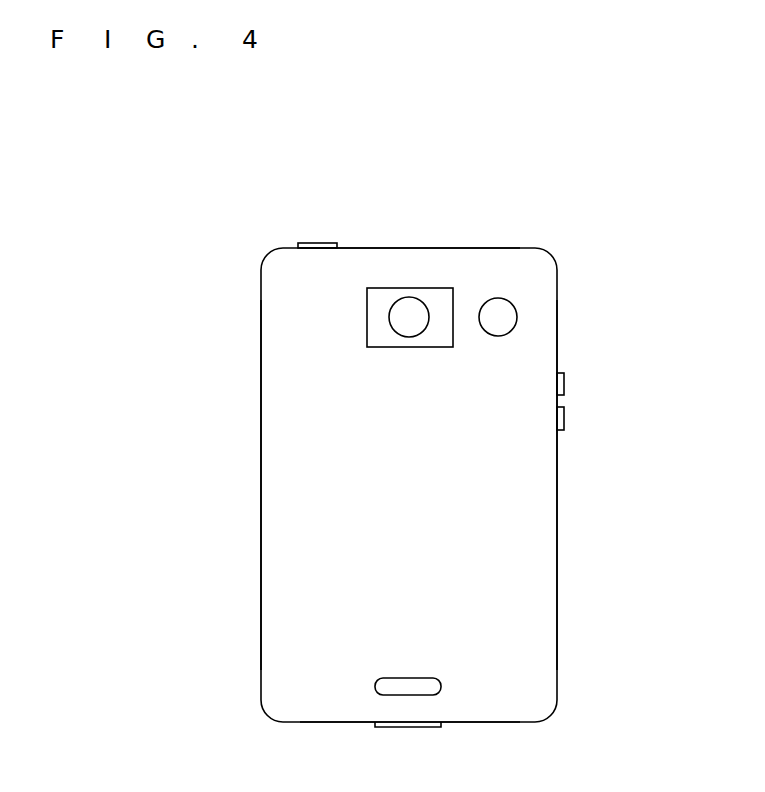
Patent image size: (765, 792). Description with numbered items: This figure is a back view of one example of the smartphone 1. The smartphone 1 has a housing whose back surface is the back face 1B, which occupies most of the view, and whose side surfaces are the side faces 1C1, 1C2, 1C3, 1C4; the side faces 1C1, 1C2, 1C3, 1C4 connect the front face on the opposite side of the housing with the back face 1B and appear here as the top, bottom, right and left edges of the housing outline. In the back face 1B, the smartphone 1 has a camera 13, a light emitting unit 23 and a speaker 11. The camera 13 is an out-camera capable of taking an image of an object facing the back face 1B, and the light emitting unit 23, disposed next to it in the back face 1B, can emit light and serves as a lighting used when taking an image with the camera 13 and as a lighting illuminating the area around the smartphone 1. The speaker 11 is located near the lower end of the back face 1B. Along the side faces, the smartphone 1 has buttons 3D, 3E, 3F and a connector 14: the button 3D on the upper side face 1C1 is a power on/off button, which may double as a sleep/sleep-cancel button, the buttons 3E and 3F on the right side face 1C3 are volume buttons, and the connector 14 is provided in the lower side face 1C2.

The smartphone 1 is at (570, 224).
The back face 1B is at (284, 449).
The side face 1C1 is at (484, 248).
The side face 1C2 is at (496, 722).
The side face 1C3 is at (557, 602).
The side face 1C4 is at (261, 556).
The button 3D is at (320, 243).
The button 3E is at (564, 384).
The button 3F is at (564, 418).
The speaker 11 is at (375, 686).
The camera 13 is at (409, 317).
The connector 14 is at (402, 727).
The light emitting unit 23 is at (517, 317).